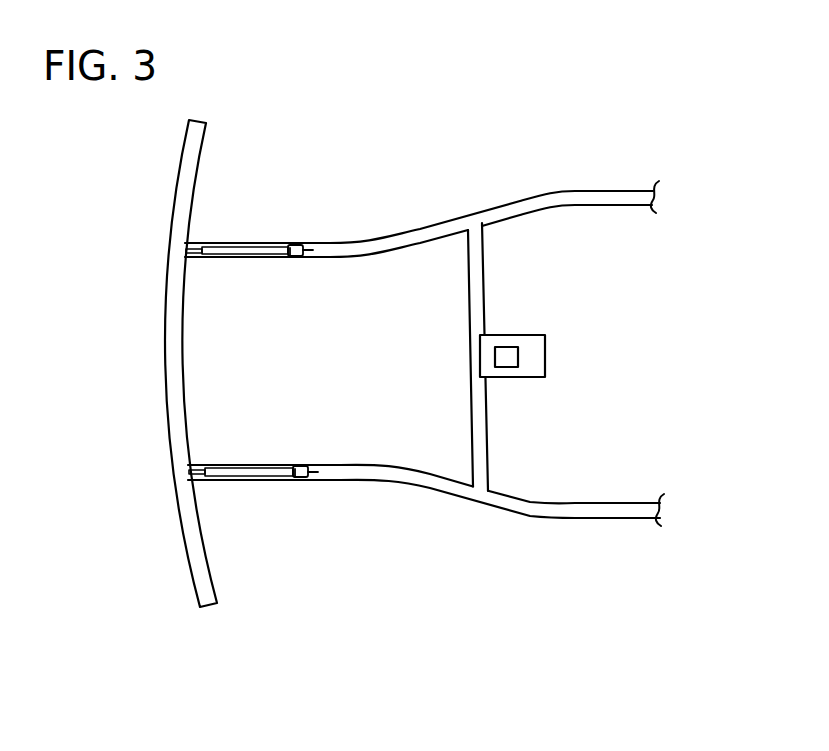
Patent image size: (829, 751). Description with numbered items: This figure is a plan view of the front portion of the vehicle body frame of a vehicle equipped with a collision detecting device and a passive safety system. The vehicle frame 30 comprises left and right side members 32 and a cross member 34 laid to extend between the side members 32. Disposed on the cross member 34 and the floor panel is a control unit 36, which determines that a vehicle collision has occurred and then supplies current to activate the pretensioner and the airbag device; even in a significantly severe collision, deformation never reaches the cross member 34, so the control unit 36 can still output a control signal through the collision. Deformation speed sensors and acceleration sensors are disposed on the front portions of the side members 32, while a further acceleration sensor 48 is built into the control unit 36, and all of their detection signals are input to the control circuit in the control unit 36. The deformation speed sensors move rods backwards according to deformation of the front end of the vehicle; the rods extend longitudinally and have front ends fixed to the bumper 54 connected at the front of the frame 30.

The vehicle frame 30 is at (424, 335).
The side member 32 is at (375, 268).
The cross member 34 is at (474, 427).
The control unit 36 is at (549, 317).
The acceleration sensor 48 is at (513, 347).
The bumper 54 is at (164, 323).